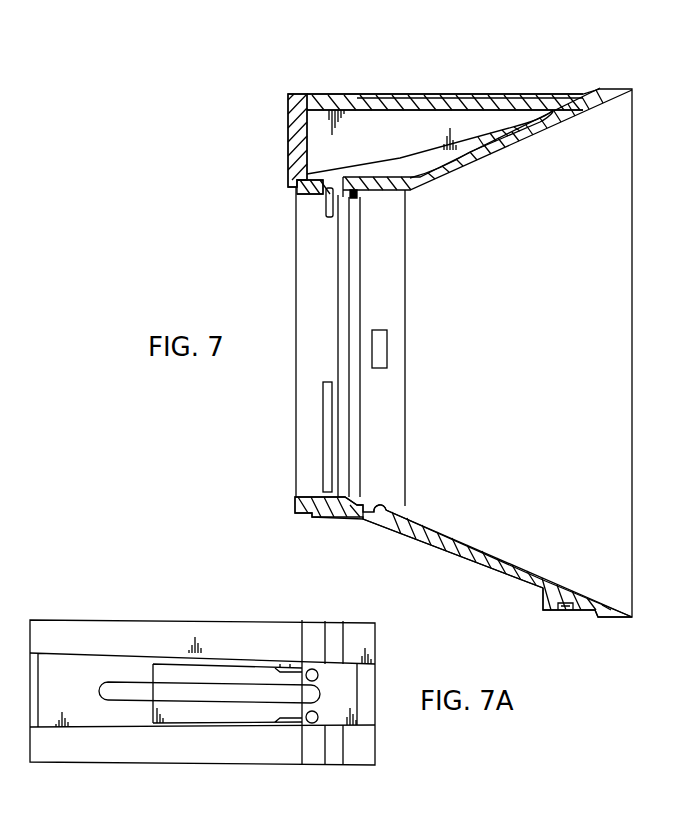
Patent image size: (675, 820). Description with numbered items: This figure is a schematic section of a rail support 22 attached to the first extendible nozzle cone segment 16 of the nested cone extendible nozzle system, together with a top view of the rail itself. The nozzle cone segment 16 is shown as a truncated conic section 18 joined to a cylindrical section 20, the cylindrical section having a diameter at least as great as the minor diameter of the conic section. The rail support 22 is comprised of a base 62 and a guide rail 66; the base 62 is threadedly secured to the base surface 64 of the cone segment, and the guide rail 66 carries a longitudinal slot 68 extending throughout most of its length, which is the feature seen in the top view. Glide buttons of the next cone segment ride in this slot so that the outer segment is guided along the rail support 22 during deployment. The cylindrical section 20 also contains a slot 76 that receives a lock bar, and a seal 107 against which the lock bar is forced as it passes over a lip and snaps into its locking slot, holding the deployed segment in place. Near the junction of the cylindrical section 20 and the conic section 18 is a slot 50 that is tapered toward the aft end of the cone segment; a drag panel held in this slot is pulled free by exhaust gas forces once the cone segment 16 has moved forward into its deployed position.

In FIG. 7, the rail support 22 is at (313, 85).
In FIG. 7, the guide rail 66 is at (337, 96).
In FIG. 7A, the guide rail 66 is at (120, 727).
In FIG. 7, the longitudinal slot 68 is at (403, 94).
In FIG. 7A, the longitudinal slot 68 is at (137, 690).
In FIG. 7, the base 62 is at (296, 139).
In FIG. 7, the base surface 64 is at (300, 195).
In FIG. 7, the seal 107 is at (352, 198).
In FIG. 7, the slot 76 is at (327, 431).
In FIG. 7, the cylindrical section 20 is at (321, 518).
In FIG. 7, the slot 50 is at (380, 514).
In FIG. 7, the first extendible nozzle cone segment 16 is at (449, 554).
In FIG. 7, the conic section 18 is at (512, 565).